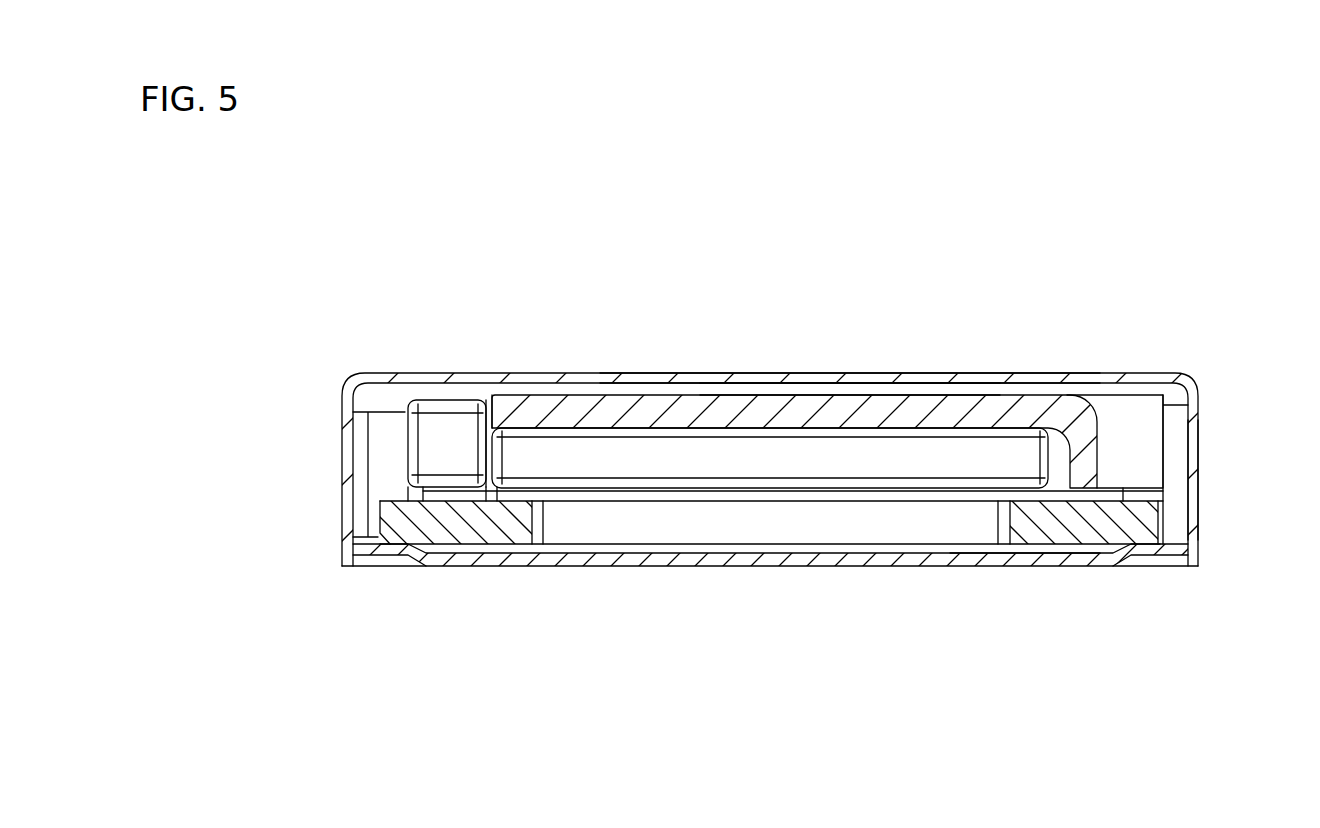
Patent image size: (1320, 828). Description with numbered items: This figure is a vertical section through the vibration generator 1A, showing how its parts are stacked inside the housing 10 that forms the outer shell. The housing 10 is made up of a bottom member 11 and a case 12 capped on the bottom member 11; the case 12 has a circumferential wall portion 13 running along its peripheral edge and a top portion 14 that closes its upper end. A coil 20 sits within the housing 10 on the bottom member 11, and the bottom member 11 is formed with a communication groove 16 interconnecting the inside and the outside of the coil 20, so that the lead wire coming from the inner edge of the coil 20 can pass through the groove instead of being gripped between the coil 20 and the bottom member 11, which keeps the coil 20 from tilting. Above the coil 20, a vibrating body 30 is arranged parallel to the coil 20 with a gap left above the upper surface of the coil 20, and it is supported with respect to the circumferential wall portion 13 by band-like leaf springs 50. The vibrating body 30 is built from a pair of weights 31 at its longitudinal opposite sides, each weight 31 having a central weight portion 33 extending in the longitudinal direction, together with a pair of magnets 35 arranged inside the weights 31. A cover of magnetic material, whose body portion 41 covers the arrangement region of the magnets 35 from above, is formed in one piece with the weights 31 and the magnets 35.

The vibration generator 1A is at (792, 243).
The housing 10 is at (1107, 373).
The bottom member 11 is at (1133, 567).
The case 12 is at (989, 373).
The circumferential wall portion 13 is at (1200, 457).
The top portion 14 is at (1052, 373).
The communication groove 16 is at (1017, 553).
The coil 20 is at (972, 528).
The vibrating body 30 is at (594, 396).
The weight 31 is at (442, 421).
The central weight portion 33 is at (463, 396).
The magnet 35 is at (777, 442).
The body portion 41 is at (866, 390).
The leaf spring 50 is at (1141, 418).